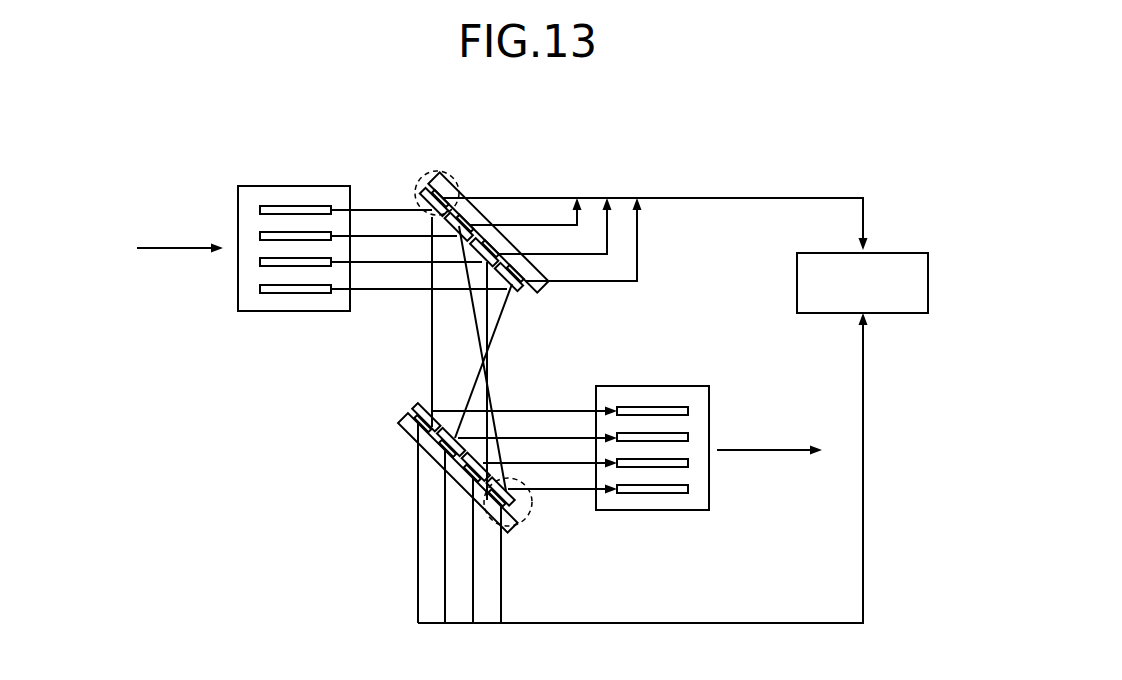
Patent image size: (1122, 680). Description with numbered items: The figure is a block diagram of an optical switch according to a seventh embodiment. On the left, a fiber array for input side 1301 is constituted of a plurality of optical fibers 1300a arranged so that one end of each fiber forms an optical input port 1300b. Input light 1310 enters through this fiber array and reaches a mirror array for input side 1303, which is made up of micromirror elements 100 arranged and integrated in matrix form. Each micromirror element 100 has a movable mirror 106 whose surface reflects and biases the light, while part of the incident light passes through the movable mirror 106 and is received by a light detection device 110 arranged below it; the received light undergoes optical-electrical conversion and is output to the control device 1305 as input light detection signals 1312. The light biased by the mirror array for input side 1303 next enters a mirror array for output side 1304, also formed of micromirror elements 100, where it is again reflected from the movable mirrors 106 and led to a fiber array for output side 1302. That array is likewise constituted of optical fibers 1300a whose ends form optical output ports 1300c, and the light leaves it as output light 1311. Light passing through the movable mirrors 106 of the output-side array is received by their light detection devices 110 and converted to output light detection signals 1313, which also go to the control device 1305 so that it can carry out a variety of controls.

The micromirror element 100 is at (452, 173).
The movable mirror 106 is at (420, 192).
The light detection device 110 is at (428, 190).
The fiber array for input side 1301 is at (338, 163).
The fiber array for output side 1302 is at (660, 386).
The mirror array for input side 1303 is at (523, 297).
The mirror array for output side 1304 is at (418, 405).
The control device 1305 is at (890, 253).
The input light 1310 is at (149, 224).
The output light 1311 is at (770, 417).
The input light detection signals 1312 is at (663, 214).
The output light detection signals 1313 is at (643, 468).
The optical fiber 1300a is at (288, 294).
The optical input port 1300b is at (260, 288).
The optical output port 1300c is at (690, 490).